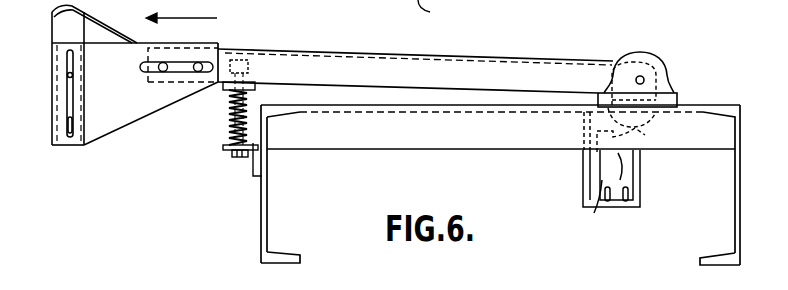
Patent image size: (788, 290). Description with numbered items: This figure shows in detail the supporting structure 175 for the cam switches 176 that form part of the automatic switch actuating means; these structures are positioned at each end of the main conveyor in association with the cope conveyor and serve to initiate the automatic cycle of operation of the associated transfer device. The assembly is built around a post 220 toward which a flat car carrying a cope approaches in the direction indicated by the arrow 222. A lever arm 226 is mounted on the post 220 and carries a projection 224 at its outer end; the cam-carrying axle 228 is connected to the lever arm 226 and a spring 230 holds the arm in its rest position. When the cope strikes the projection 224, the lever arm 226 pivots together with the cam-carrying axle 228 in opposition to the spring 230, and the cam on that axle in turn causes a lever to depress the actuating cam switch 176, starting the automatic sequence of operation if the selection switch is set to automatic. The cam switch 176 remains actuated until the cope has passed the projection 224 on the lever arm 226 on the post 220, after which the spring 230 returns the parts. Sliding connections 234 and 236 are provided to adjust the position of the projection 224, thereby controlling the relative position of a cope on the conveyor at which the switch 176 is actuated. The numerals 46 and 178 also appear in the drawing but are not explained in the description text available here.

The tray frame member 46 is at (435, 10).
The supporting structure 175 is at (364, 118).
The cam switch 176 is at (636, 168).
The slide member 178 is at (618, 201).
The post 220 is at (500, 185).
The arrow 222 is at (181, 25).
The projection 224 is at (94, 21).
The lever arm 226 is at (342, 50).
The cam carrying axle 228 is at (645, 78).
The spring 230 is at (230, 120).
The sliding connection 234 is at (115, 78).
The sliding connection 236 is at (177, 68).